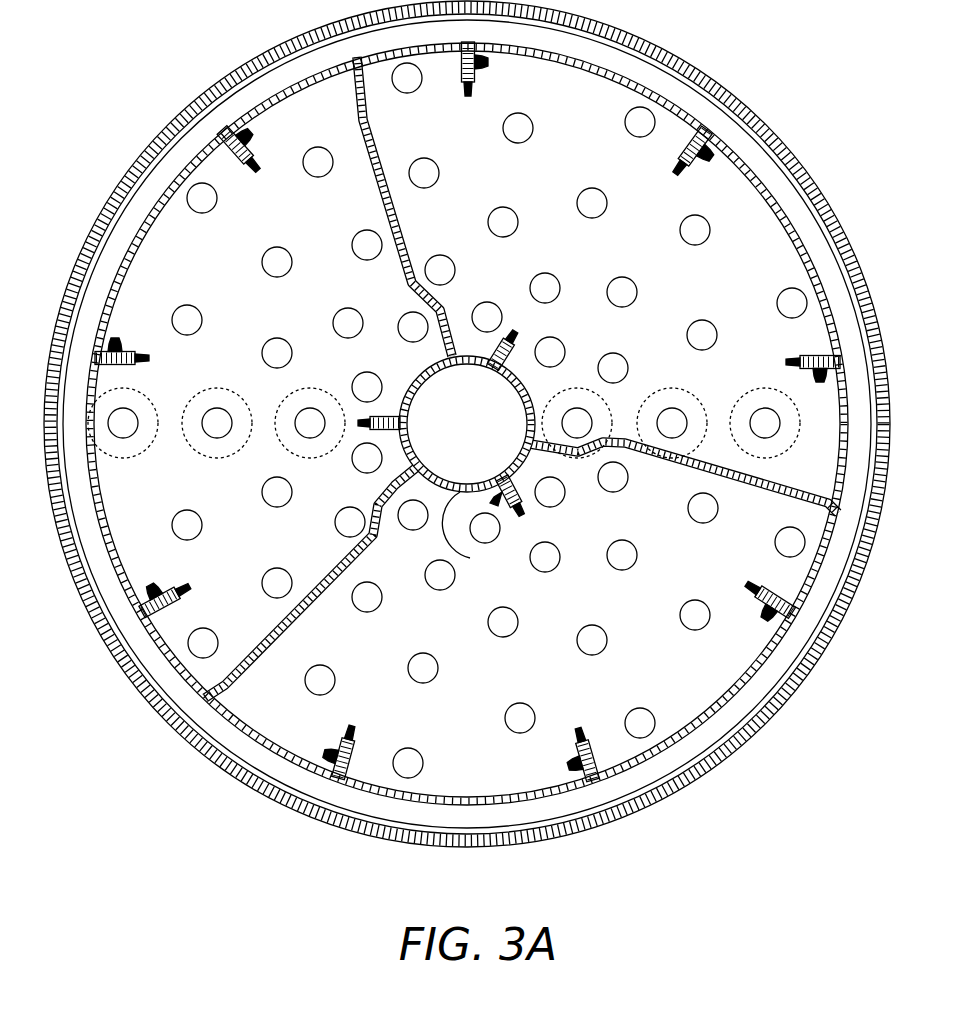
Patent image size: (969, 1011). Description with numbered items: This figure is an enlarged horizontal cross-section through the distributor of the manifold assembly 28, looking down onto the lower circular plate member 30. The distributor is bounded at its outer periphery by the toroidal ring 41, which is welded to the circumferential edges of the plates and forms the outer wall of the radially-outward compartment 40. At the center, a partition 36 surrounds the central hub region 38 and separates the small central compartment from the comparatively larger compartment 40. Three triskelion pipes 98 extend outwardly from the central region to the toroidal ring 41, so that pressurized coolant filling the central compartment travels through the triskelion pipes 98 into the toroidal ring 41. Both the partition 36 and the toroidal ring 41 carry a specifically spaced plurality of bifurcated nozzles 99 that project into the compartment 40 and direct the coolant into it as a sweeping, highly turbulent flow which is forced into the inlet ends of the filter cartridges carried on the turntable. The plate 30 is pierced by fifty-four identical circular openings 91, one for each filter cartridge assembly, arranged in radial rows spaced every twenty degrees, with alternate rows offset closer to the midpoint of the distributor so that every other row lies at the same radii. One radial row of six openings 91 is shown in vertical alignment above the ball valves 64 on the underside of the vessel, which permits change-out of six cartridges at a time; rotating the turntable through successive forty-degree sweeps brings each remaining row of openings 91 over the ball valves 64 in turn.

The manifold assembly 28 is at (145, 731).
The lower circular plate member 30 is at (181, 280).
The partition 36 is at (480, 542).
The central hub 38 is at (442, 443).
The radially-outward compartment 40 is at (436, 732).
The toroidal ring 41 is at (742, 705).
The ball valves 64 is at (133, 455).
The openings 91 is at (592, 205).
The triskelion pipes 98 is at (367, 103).
The bifurcated nozzles 99 is at (467, 95).